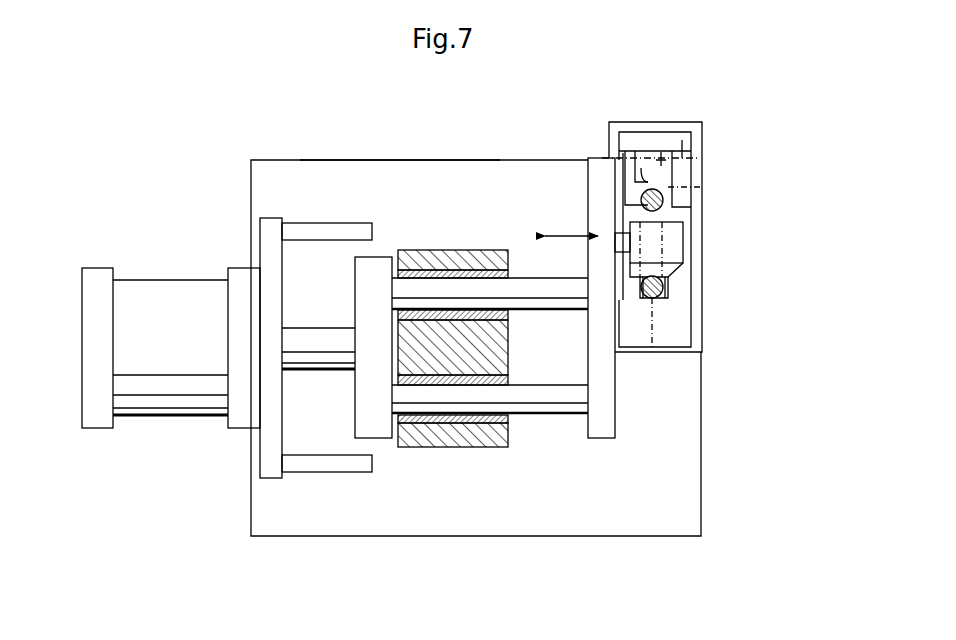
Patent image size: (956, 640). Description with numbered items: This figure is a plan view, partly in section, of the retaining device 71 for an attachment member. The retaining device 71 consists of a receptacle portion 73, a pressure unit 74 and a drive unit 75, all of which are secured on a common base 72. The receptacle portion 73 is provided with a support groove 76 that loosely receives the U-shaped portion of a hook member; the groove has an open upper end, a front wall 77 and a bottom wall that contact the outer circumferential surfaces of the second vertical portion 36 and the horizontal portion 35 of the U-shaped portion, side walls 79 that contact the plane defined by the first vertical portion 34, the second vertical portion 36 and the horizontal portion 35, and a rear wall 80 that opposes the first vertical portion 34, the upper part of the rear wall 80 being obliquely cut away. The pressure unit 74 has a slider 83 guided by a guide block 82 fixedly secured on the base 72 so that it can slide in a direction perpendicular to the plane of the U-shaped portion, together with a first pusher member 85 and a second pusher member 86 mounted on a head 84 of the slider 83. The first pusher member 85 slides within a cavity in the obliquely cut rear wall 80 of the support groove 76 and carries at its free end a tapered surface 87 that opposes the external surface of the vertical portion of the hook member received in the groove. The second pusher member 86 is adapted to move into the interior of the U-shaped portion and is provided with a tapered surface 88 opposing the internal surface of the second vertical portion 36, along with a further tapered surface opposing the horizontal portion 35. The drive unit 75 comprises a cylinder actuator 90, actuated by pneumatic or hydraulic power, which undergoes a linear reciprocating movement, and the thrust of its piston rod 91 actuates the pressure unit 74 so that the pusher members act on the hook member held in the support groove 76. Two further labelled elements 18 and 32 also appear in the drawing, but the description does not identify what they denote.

The retaining device 71 is at (262, 146).
The base 72 is at (437, 160).
The receptacle portion 73 is at (699, 342).
The pressure unit 74 is at (496, 244).
The drive unit 75 is at (184, 278).
The support groove 76 is at (646, 172).
The front wall 77 is at (640, 300).
The side walls 79 is at (668, 297).
The rear wall 80 is at (661, 165).
The guide block 82 is at (432, 250).
The slider 83 is at (538, 416).
The head 84 is at (610, 377).
The first pusher member 85 is at (682, 152).
The second pusher member 86 is at (680, 245).
The tapered surface 87 is at (666, 188).
The tapered surface 88 is at (673, 272).
The cylinder actuator 90 is at (186, 338).
The piston rod 91 is at (313, 330).
The locking element 18 is at (632, 284).
The slide 32 is at (668, 216).
The first vertical portion 34 is at (638, 198).
The horizontal portion 35 is at (640, 216).
The second vertical portion 36 is at (640, 290).